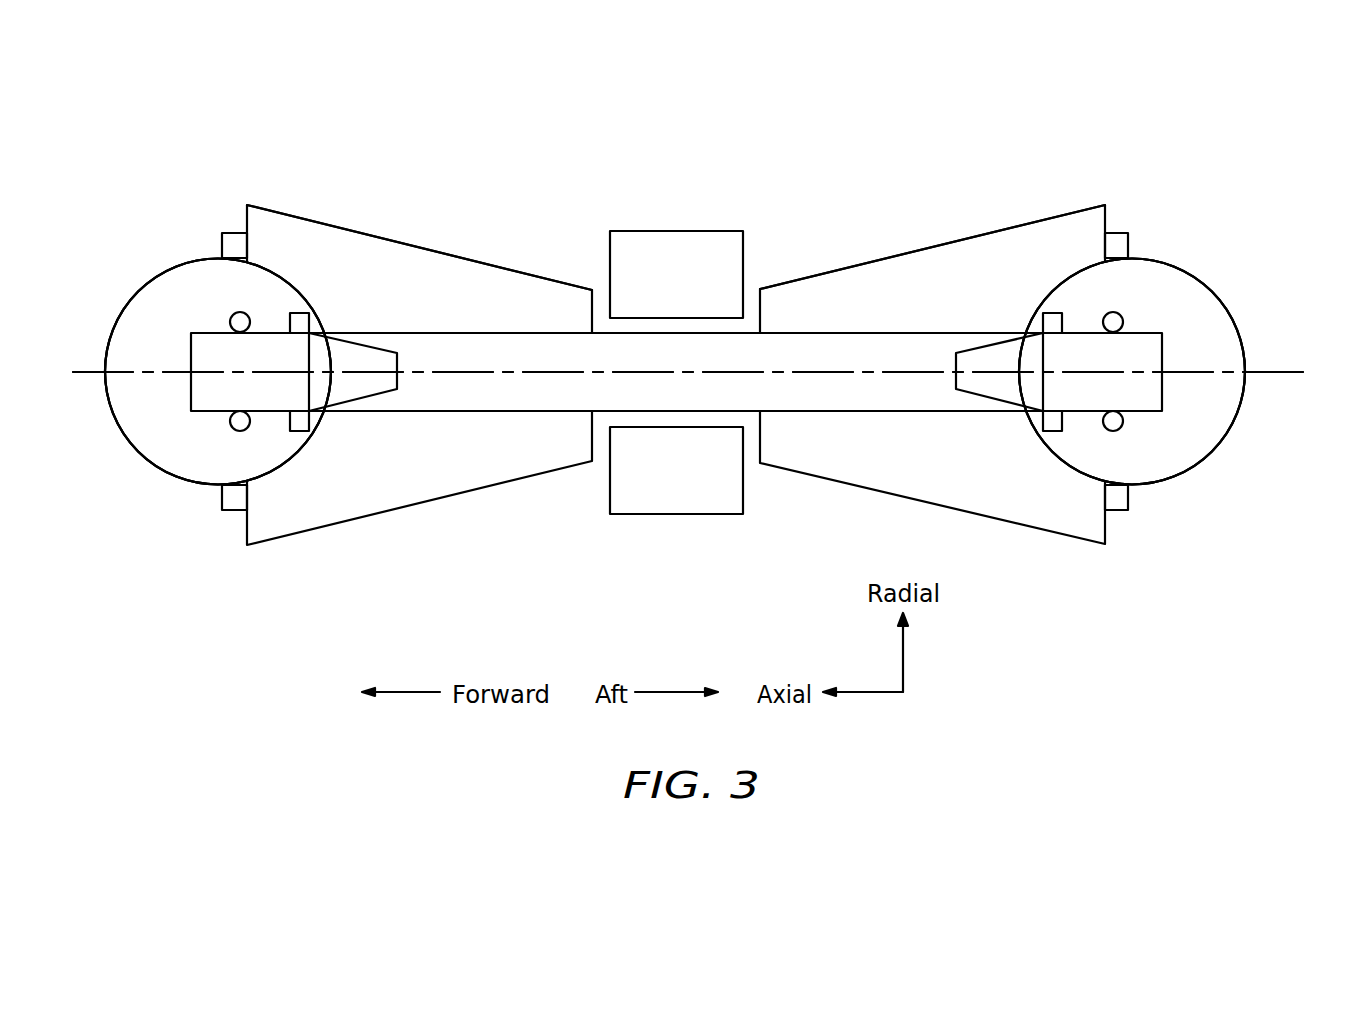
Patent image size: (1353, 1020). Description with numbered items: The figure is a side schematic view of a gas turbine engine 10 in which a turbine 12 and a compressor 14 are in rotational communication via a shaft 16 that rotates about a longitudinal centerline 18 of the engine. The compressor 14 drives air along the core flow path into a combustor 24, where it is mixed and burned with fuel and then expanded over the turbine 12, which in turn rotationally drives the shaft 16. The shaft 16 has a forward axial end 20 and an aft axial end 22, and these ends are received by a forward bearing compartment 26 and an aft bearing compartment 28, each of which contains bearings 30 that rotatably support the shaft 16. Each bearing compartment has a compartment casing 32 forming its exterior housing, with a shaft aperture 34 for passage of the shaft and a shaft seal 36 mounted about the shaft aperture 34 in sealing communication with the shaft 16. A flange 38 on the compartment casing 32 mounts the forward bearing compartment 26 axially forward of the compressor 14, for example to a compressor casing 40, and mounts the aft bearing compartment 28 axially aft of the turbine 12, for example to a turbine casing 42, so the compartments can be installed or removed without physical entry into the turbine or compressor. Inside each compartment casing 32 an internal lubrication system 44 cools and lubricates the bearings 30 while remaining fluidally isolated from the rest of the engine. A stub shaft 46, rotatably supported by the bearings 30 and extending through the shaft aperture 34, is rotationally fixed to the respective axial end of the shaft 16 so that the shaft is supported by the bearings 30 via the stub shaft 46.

The gas turbine engine 10 is at (690, 220).
The turbine 12 is at (950, 222).
The compressor 14 is at (410, 215).
The shaft 16 is at (835, 392).
The longitudinal centerline 18 is at (1293, 375).
The forward axial end 20 is at (175, 336).
The aft axial end 22 is at (1182, 348).
The combustor 24 is at (665, 230).
The forward bearing compartment 26 is at (126, 470).
The aft bearing compartment 28 is at (1224, 474).
The bearings 30 is at (244, 296).
The compartment casing 32 is at (183, 258).
The shaft aperture 34 is at (338, 428).
The shaft seal 36 is at (318, 294).
The flange 38 is at (232, 233).
The compressor casing 40 is at (537, 273).
The turbine casing 42 is at (863, 260).
The internal lubrication system 44 is at (152, 400).
The stub shaft 46 is at (370, 383).